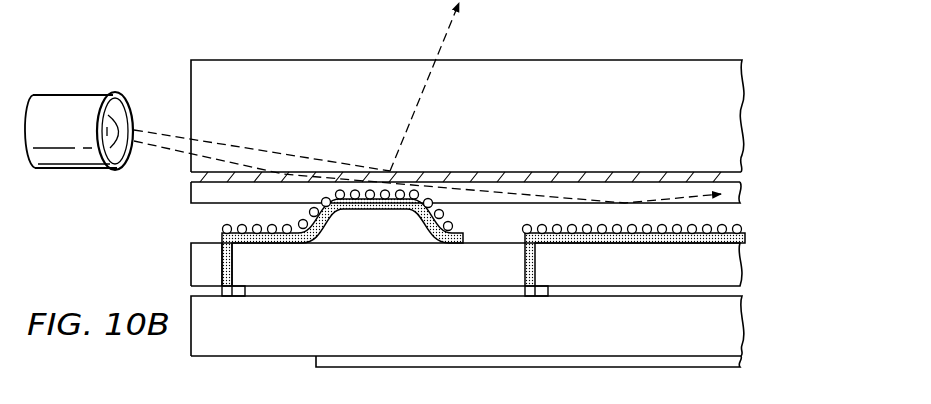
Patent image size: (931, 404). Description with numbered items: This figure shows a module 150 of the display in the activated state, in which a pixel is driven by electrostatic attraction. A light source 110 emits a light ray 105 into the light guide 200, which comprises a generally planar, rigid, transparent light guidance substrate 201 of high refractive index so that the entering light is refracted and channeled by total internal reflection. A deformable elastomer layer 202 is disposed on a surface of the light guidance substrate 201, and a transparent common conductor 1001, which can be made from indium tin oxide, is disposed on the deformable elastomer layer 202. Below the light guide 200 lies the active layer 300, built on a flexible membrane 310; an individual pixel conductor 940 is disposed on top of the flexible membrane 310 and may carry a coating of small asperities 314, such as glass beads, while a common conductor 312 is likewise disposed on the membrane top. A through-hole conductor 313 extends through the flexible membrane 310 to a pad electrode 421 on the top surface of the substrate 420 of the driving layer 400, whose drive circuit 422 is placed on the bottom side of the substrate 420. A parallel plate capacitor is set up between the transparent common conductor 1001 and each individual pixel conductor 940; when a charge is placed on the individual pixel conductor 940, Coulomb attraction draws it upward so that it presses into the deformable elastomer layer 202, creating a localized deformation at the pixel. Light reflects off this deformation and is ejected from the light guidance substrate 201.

The module 150 is at (79, 123).
The light source 110 is at (73, 170).
The light ray 105 is at (413, 107).
The light guide 200 is at (534, 131).
The light guidance substrate 201 is at (745, 80).
The transparent common conductor 1001 is at (745, 175).
The deformable elastomer layer 202 is at (745, 195).
The active layer 300 is at (507, 241).
The flexible membrane 310 is at (743, 268).
The common conductor 312 is at (222, 235).
The through-hole conductor 313 is at (220, 258).
The small asperities 314 is at (741, 226).
The individual pixel conductor 940 is at (746, 240).
The pad electrode 421 is at (232, 297).
The driving layer 400 is at (534, 341).
The substrate 420 is at (746, 320).
The drive circuit 422 is at (742, 362).